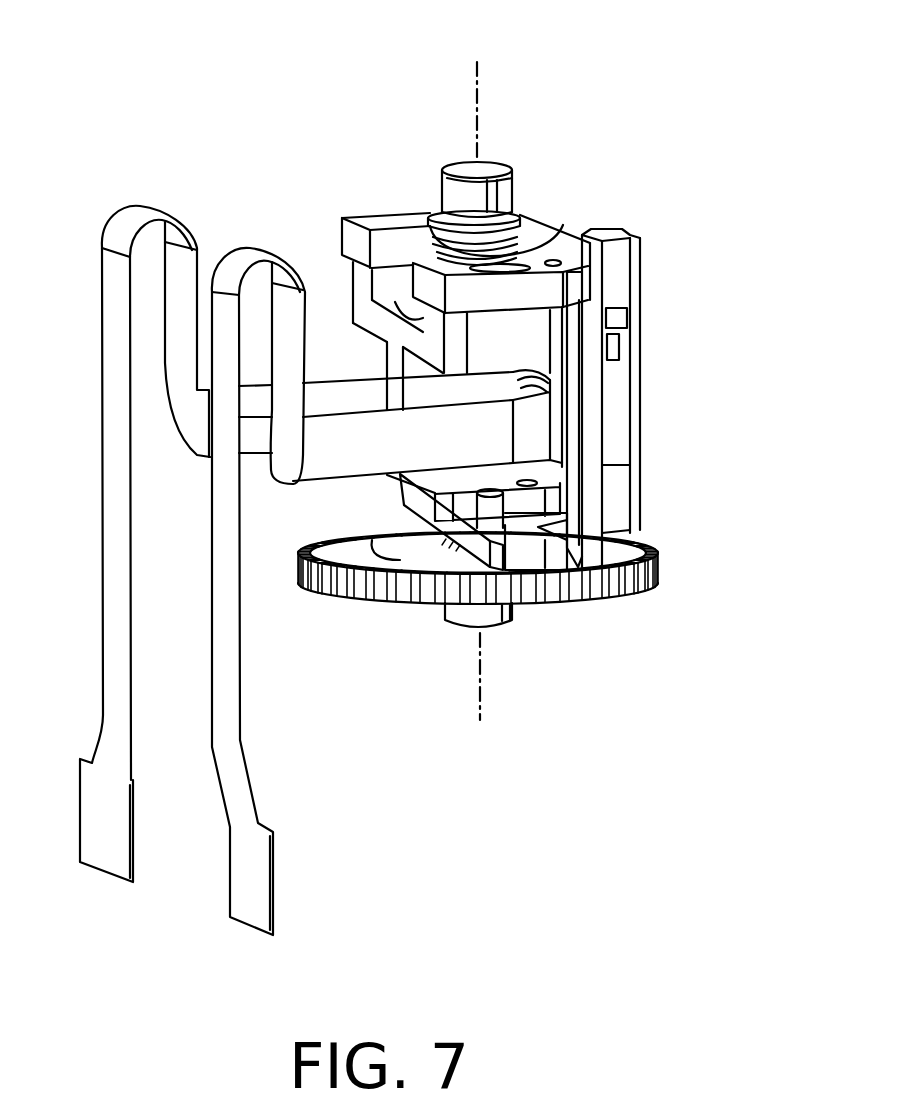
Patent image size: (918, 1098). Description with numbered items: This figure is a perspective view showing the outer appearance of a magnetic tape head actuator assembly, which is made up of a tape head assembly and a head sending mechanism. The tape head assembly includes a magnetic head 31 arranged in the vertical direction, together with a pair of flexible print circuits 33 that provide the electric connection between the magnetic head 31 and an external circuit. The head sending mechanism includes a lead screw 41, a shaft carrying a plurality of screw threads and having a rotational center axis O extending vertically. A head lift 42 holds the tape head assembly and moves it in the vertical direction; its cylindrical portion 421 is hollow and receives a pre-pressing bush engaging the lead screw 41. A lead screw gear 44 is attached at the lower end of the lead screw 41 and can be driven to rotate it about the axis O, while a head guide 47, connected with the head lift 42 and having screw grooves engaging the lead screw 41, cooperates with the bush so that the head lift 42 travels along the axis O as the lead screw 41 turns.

The rotational center axis O is at (477, 92).
The lead screw 41 is at (500, 198).
The head lift 42 is at (530, 340).
The cylindrical portion 421 is at (405, 370).
The magnetic head 31 is at (620, 281).
The flexible print circuits 33 is at (340, 443).
The lead screw gear 44 is at (657, 578).
The head guide 47 is at (562, 598).